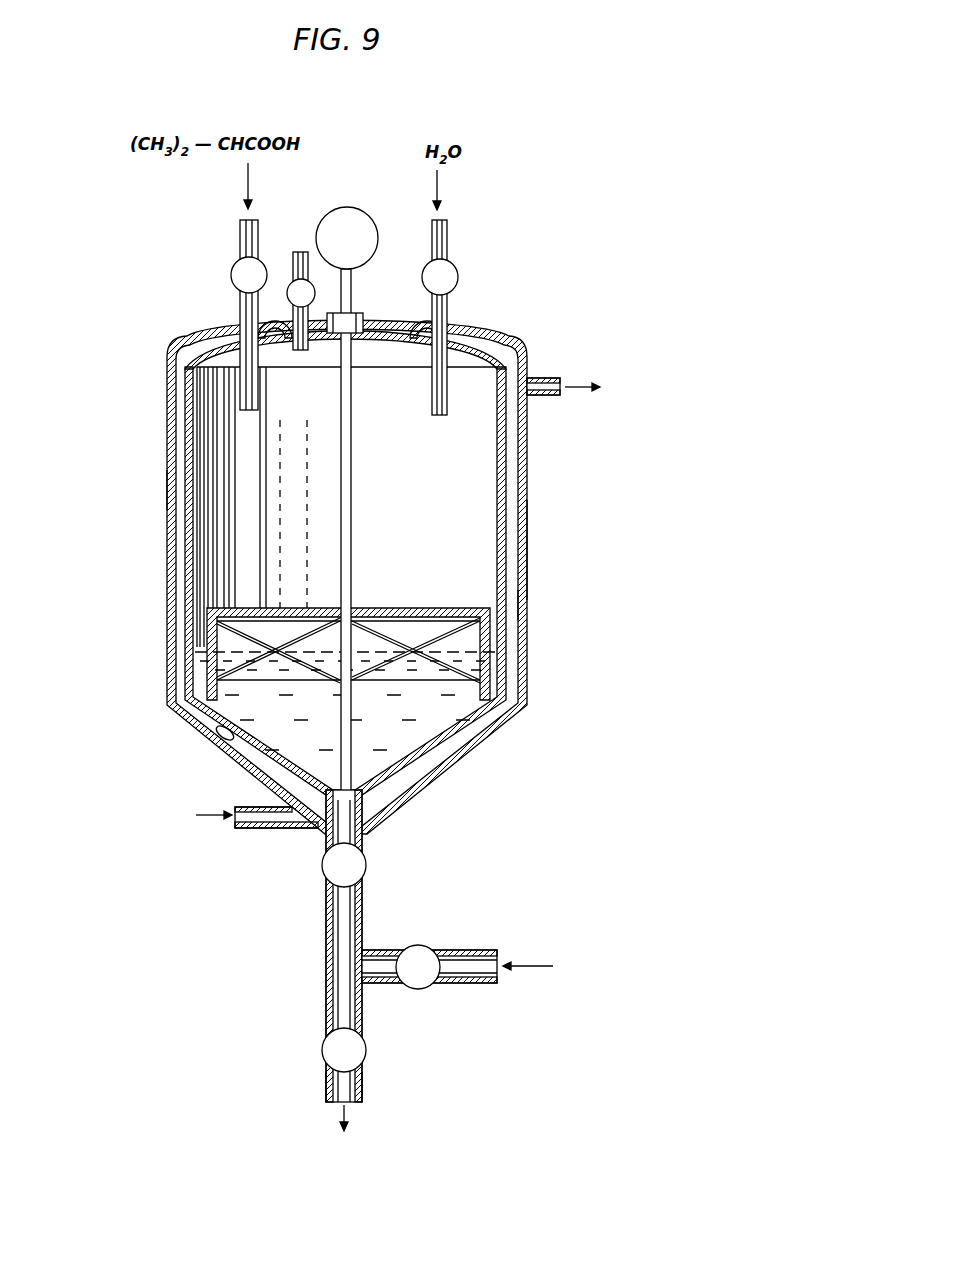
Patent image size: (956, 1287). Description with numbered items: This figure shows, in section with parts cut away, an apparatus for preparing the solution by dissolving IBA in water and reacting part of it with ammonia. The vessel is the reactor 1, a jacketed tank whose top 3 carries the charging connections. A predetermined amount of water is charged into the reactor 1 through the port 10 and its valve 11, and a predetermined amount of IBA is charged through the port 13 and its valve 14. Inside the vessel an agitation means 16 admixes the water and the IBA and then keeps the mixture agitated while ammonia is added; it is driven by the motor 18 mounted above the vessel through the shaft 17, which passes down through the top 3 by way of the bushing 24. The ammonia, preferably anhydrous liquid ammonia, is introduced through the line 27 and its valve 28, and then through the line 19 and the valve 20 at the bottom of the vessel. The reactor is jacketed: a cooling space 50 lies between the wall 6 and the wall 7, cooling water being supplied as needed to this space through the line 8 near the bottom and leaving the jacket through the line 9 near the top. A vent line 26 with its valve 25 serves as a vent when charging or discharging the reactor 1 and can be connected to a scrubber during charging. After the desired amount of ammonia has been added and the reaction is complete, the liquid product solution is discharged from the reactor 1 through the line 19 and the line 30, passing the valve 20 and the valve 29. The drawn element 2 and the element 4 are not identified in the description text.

The reactor 1 is at (536, 455).
The inner vessel wall 2 is at (497, 466).
The top 3 is at (395, 346).
The jacket drain opening 4 is at (214, 738).
The wall 6 is at (187, 655).
The wall 7 is at (528, 548).
The line 8 is at (268, 818).
The line 9 is at (551, 378).
The port 10 is at (447, 235).
The valve 11 is at (458, 276).
The port 13 is at (240, 236).
The valve 14 is at (231, 278).
The agitation means 16 is at (402, 755).
The shaft 17 is at (352, 488).
The motor 18 is at (358, 216).
The line 19 is at (365, 893).
The valve 20 is at (321, 868).
The bushing 24 is at (364, 322).
The valve 25 is at (288, 296).
The vent line 26 is at (298, 255).
The line 27 is at (486, 950).
The valve 28 is at (423, 945).
The valve 29 is at (367, 1043).
The line 30 is at (364, 1068).
The cooling space 50 is at (177, 490).